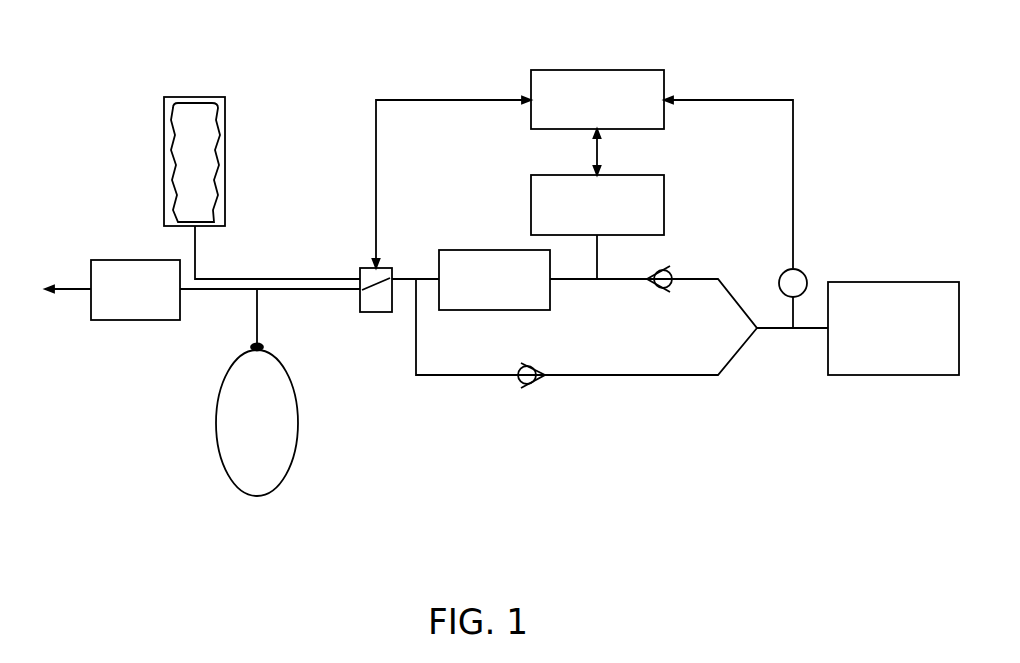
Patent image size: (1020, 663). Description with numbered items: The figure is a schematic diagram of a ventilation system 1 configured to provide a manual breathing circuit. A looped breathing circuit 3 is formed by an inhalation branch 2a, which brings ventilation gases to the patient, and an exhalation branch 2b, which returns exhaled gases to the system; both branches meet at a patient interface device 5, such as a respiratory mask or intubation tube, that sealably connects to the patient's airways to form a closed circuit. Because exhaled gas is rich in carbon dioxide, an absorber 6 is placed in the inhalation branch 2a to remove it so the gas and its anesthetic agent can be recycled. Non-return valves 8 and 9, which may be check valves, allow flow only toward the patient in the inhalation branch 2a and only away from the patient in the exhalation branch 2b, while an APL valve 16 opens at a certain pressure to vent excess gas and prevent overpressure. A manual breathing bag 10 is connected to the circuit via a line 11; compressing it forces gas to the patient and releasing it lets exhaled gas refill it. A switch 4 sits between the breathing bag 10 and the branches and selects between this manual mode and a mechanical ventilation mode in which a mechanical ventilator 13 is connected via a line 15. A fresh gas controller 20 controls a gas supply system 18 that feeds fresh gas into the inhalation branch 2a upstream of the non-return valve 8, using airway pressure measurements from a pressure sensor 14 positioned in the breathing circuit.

The ventilation system 1 is at (843, 31).
The inhalation branch 2a is at (718, 259).
The exhalation branch 2b is at (717, 389).
The breathing circuit 3 is at (812, 203).
The switch 4 is at (377, 329).
The patient interface device 5 is at (890, 376).
The absorber 6 is at (495, 312).
The non-return valve 8 is at (673, 291).
The non-return valve 9 is at (538, 399).
The manual breathing bag 10 is at (258, 500).
The line 11 is at (312, 304).
The mechanical ventilator 13 is at (148, 132).
The pressure sensor 14 is at (807, 270).
The line 15 is at (233, 263).
The APL valve 16 is at (135, 322).
The gas supply system 18 is at (531, 205).
The fresh gas controller 20 is at (600, 70).